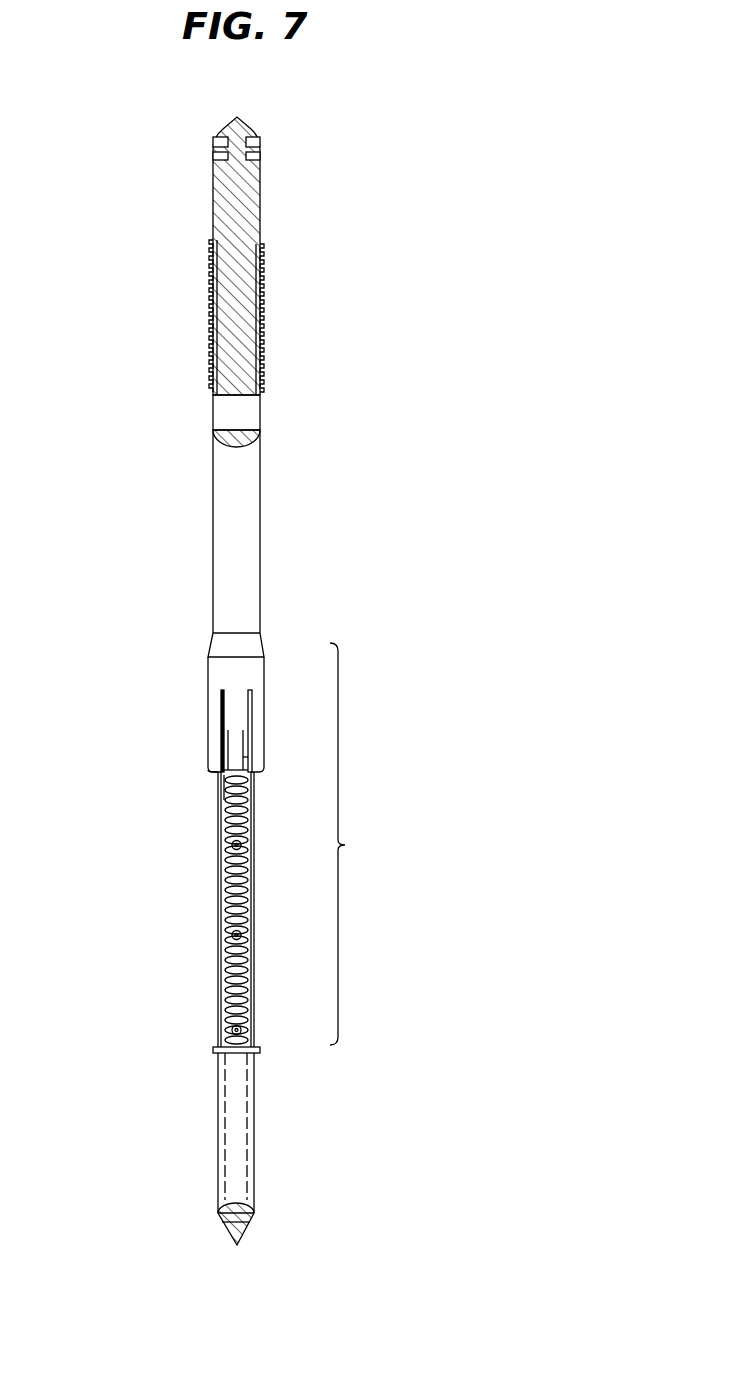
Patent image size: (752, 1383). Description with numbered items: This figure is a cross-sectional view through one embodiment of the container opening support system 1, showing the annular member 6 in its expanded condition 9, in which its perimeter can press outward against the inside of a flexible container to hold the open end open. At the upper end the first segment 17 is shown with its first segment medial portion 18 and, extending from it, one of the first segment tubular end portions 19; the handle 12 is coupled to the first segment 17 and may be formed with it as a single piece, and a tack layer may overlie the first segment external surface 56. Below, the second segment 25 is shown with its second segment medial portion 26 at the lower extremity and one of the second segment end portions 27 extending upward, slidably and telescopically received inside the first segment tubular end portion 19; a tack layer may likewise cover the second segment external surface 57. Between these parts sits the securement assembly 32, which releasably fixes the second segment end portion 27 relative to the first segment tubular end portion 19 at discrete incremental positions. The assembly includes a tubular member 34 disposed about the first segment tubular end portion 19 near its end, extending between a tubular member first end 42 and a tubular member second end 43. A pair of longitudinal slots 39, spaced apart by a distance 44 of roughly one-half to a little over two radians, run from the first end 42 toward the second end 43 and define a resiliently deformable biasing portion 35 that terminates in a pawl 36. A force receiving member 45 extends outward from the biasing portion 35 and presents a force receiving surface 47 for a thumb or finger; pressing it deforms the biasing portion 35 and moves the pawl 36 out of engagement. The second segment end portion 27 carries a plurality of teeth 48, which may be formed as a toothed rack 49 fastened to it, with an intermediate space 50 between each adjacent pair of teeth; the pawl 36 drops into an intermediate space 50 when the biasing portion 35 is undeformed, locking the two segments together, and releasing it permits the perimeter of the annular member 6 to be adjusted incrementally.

The container opening support system 1 is at (427, 95).
The annular member 6 is at (185, 135).
The expanded condition 9 is at (268, 229).
The first segment medial portion 18 is at (237, 117).
The handle 12 is at (263, 326).
The first segment external surface 56 is at (237, 475).
The first segment 17 is at (285, 490).
The first segment tubular end portions 19 is at (248, 548).
The tubular member second end 43 is at (262, 636).
The tubular member 34 is at (262, 662).
The distance 44 is at (282, 671).
The biasing portion 35 is at (235, 703).
The longitudinal slots 39 is at (222, 725).
The force receiving member 45 is at (233, 748).
The force receiving surface 47 is at (246, 757).
The tubular member first end 42 is at (207, 777).
The securement assembly 32 is at (345, 845).
The toothed rack 49 is at (220, 945).
The pawl 36 is at (225, 800).
The plurality of teeth 48 is at (246, 985).
The intermediate space 50 is at (242, 860).
The second segment end portions 27 is at (256, 937).
The second segment 25 is at (268, 1095).
The second segment external surface 57 is at (240, 1163).
The second segment medial portion 26 is at (238, 1245).